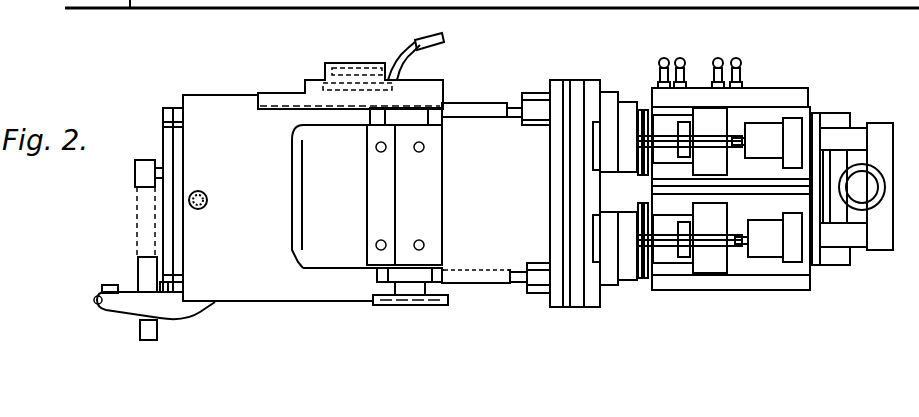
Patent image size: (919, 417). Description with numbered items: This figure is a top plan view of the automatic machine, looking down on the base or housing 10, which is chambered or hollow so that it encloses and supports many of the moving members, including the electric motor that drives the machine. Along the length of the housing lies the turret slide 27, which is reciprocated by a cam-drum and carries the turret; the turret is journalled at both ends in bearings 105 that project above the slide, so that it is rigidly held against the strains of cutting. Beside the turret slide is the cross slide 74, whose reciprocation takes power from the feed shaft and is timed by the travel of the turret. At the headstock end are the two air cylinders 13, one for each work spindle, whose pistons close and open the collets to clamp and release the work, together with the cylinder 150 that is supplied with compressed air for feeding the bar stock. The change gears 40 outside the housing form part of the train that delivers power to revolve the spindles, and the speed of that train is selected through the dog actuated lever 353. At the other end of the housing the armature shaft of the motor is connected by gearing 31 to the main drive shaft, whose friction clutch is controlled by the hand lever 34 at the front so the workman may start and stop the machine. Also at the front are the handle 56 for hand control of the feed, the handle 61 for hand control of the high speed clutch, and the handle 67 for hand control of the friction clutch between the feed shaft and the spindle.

The base or housing 10 is at (516, 283).
The air cylinder 13 is at (767, 190).
The turret slide 27 is at (275, 216).
The gearing 31 is at (135, 172).
The hand lever 34 is at (417, 44).
The change gears 40 is at (852, 189).
The handle 56 is at (742, 62).
The handle 61 is at (721, 60).
The handle 67 is at (659, 63).
The cross slide 74 is at (558, 157).
The bearings 105 is at (420, 113).
The cylinder 150 is at (862, 187).
The dog actuated lever 353 is at (688, 85).